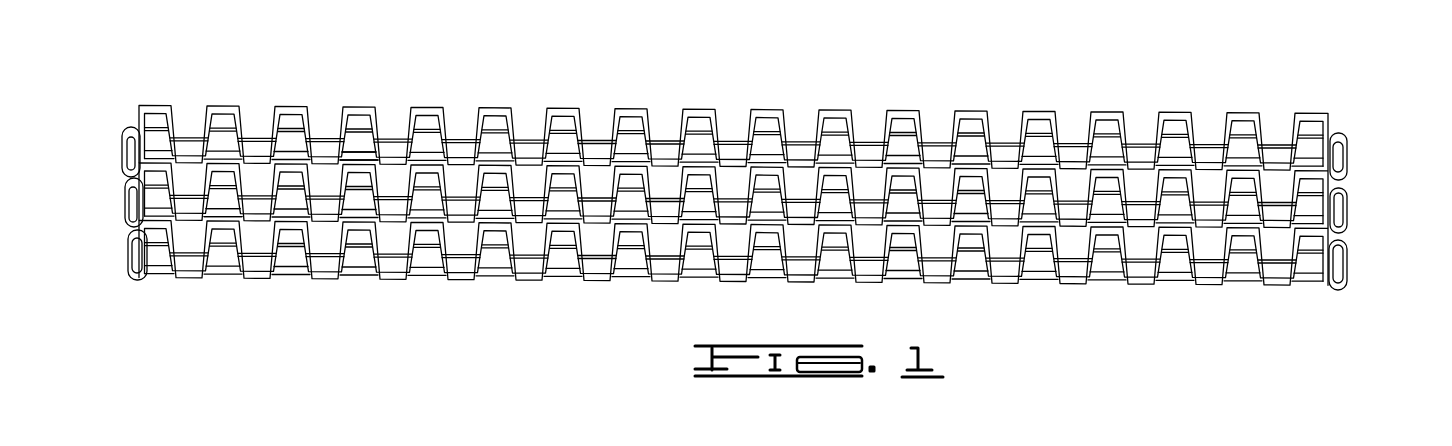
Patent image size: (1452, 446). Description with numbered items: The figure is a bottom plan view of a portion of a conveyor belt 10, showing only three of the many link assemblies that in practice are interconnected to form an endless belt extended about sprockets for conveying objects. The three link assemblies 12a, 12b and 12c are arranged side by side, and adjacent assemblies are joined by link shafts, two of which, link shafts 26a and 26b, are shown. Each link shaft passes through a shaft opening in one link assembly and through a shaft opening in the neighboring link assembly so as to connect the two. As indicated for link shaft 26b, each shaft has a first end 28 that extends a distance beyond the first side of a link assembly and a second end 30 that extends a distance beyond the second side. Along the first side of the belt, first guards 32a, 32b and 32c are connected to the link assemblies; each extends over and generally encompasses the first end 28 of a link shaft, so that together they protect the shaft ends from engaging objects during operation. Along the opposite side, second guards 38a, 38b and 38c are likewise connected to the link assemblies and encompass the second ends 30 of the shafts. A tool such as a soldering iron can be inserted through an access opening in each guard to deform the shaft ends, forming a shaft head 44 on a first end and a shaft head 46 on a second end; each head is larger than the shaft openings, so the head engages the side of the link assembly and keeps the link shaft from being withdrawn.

The conveyor belt 10 is at (1338, 102).
The link assembly 12a is at (1335, 120).
The link assembly 12b is at (1352, 188).
The link assembly 12c is at (1352, 245).
The link shaft 26a is at (231, 224).
The link shaft 26b is at (363, 166).
The first end 28 is at (131, 164).
The second end 30 is at (1340, 170).
The first guard 32a is at (123, 157).
The first guard 32b is at (127, 200).
The first guard 32c is at (130, 260).
The second guard 38a is at (1348, 148).
The second guard 38b is at (1348, 204).
The second guard 38c is at (1347, 268).
The shaft head 44 is at (137, 218).
The shaft head 46 is at (1340, 223).